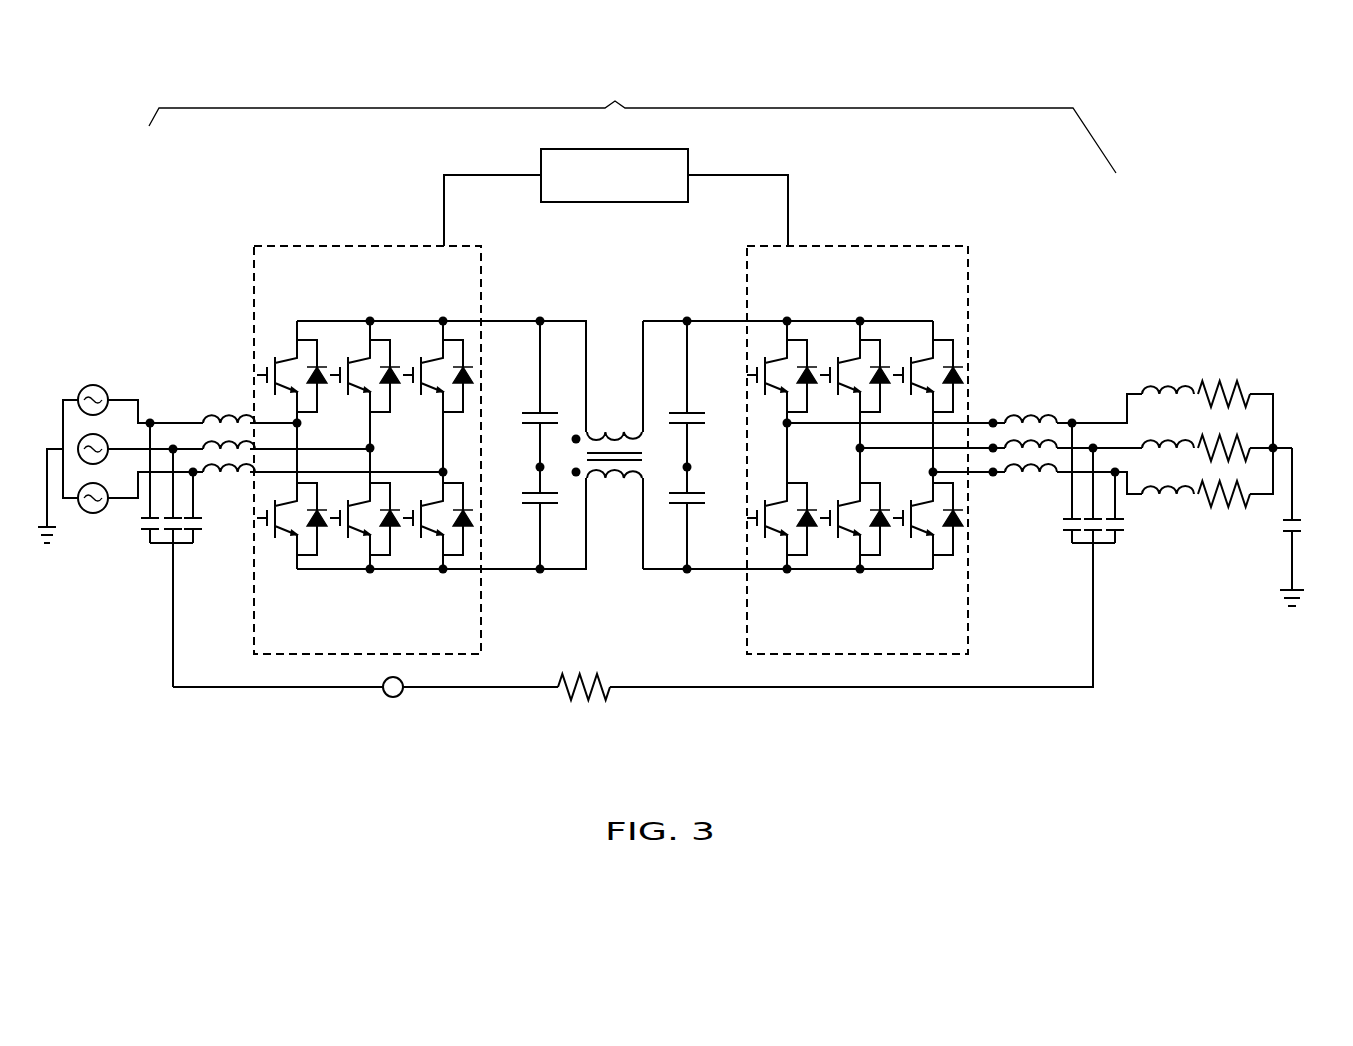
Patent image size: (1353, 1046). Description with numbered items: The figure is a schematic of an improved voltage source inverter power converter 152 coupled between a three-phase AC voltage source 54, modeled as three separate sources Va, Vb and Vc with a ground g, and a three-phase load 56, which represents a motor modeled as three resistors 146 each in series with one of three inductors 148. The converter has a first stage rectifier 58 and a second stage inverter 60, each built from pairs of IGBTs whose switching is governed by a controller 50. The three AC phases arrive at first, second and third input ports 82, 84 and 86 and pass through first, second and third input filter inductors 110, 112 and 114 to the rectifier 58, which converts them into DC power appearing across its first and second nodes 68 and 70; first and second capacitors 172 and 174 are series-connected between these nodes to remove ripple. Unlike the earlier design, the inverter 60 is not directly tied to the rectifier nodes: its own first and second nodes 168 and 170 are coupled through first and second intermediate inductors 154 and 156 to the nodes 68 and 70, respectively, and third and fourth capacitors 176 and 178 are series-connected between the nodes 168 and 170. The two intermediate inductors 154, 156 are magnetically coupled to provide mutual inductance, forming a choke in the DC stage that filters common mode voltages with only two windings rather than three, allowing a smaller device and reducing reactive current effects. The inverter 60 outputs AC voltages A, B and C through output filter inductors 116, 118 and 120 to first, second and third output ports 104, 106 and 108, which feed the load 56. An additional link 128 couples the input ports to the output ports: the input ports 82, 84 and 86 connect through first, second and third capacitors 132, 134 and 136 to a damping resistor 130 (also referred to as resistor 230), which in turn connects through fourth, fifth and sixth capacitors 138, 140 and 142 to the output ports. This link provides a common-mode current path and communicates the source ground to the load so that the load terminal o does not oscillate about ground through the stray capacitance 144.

The controller 50 is at (616, 147).
The three-phase AC voltage source 54 is at (84, 376).
The three-phase load 56 is at (1219, 441).
The rectifier 58 is at (403, 242).
The inverter 60 is at (868, 242).
The first node 68 is at (532, 316).
The second node 70 is at (538, 576).
The first input port 82 is at (160, 416).
The second input port 84 is at (133, 462).
The third input port 86 is at (198, 480).
The first output port 104 is at (1088, 415).
The second output port 106 is at (1113, 440).
The third output port 108 is at (1061, 463).
The first input filter inductor 110 is at (216, 414).
The second input filter inductor 112 is at (226, 441).
The third input filter inductor 114 is at (222, 475).
The output filter inductor 116 is at (1032, 412).
The output filter inductor 118 is at (1031, 452).
The output filter inductor 120 is at (1019, 477).
The additional link 128 is at (393, 698).
The resistor 130 is at (544, 720).
The first capacitor 132 is at (152, 542).
The second capacitor 134 is at (169, 545).
The third capacitor 136 is at (187, 545).
The fourth capacitor 138 is at (1071, 538).
The fifth capacitor 140 is at (1094, 546).
The sixth capacitor 142 is at (1120, 540).
The stray capacitance 144 is at (1306, 527).
The resistors 146 is at (1225, 508).
The inductors 148 is at (1167, 508).
The power converter 152 is at (632, 121).
The first intermediate inductor 154 is at (619, 404).
The second intermediate inductor 156 is at (619, 520).
The first node 168 is at (697, 316).
The second node 170 is at (692, 576).
The first capacitor 172 is at (524, 402).
The second capacitor 174 is at (531, 505).
The third capacitor 176 is at (704, 402).
The fourth capacitor 178 is at (699, 505).
The resistor 230 is at (607, 700).